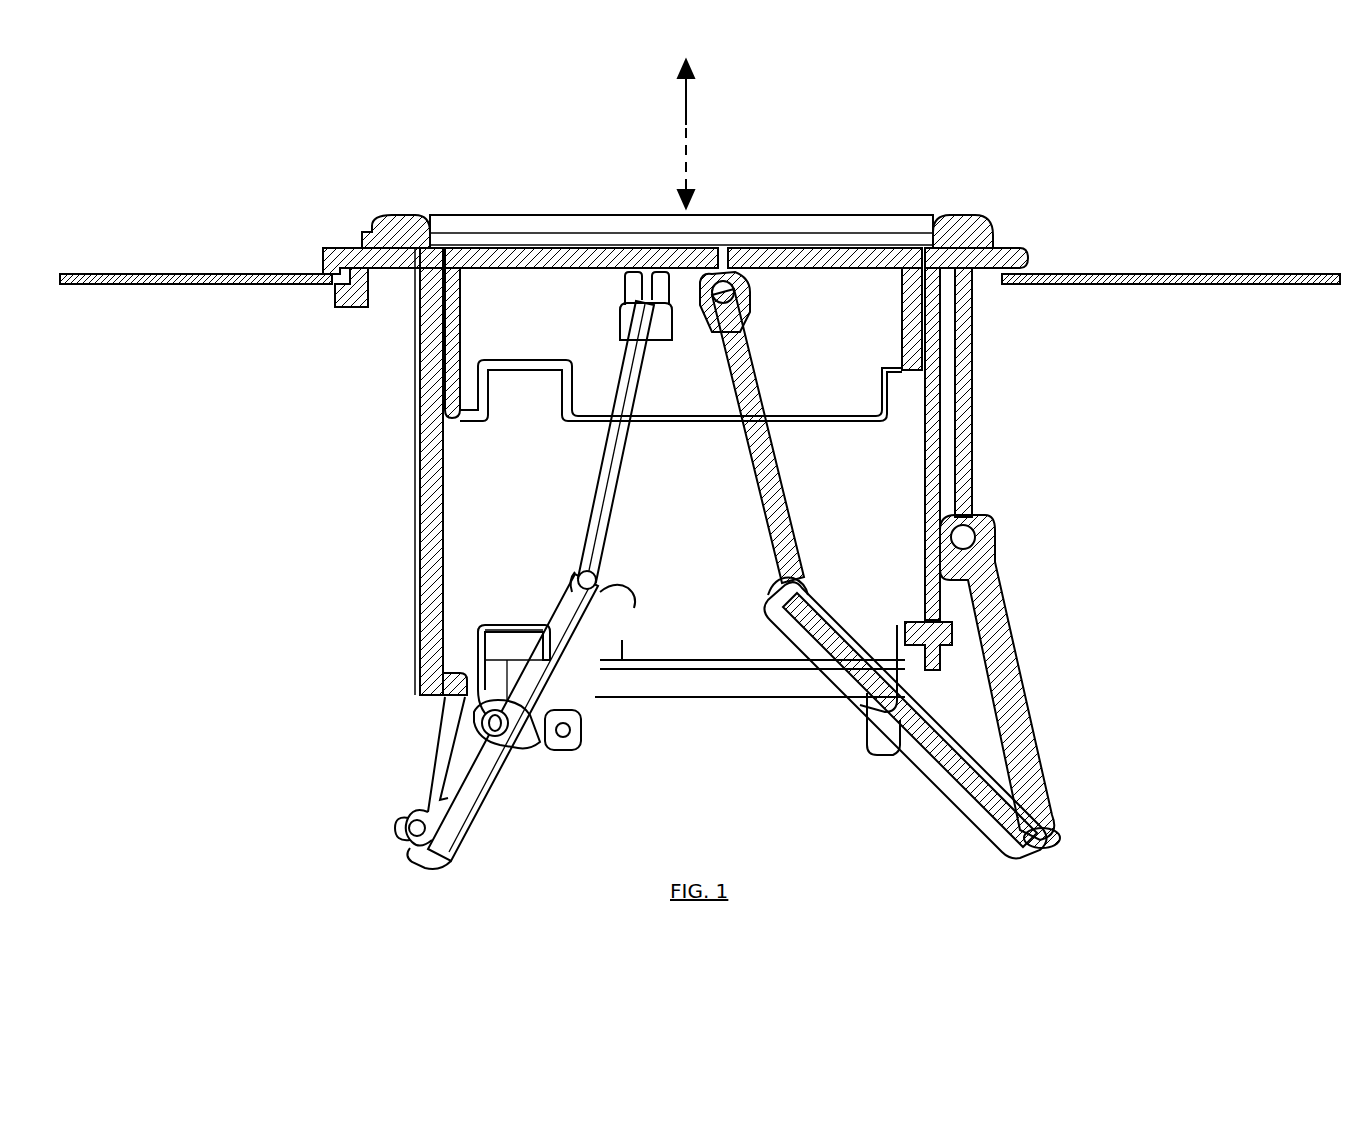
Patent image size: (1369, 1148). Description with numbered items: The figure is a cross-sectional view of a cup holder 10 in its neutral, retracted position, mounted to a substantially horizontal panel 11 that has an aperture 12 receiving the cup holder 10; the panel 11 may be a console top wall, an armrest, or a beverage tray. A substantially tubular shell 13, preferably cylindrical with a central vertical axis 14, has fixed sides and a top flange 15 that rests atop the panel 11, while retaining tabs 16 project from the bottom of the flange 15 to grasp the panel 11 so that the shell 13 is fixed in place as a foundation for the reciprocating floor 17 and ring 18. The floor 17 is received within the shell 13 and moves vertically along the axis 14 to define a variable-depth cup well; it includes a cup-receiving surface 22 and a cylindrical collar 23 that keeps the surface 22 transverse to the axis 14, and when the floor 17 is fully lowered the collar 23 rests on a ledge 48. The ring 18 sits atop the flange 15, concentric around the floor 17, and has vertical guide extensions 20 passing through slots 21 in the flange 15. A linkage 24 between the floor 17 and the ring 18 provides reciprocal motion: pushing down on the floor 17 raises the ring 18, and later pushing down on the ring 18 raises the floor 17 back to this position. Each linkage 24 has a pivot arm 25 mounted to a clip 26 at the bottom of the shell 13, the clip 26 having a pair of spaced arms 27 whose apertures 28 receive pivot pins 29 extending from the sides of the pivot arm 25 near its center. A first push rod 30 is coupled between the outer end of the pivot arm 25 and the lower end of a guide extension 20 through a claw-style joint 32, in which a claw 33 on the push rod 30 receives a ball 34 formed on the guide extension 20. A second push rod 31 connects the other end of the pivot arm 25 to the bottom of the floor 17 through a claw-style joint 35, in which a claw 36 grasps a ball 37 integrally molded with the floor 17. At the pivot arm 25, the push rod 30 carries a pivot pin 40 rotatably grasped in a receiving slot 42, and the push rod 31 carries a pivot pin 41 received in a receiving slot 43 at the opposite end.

The cup holder 10 is at (828, 165).
The panel 11 is at (145, 270).
The aperture 12 is at (1000, 290).
The tubular shell 13 is at (418, 470).
The central vertical axis 14 is at (683, 130).
The top flange 15 is at (345, 245).
The retaining tabs 16 is at (350, 305).
The floor 17 is at (485, 248).
The ring 18 is at (425, 213).
The vertical guide extensions 20 is at (975, 410).
The slots 21 is at (1000, 258).
The cup-receiving surface 22 is at (722, 215).
The cylindrical collar 23 is at (465, 320).
The linkage 24 is at (1080, 705).
The pivot arm 25 is at (918, 818).
The clip 26 is at (510, 620).
The spaced arms 27 is at (480, 722).
The apertures 28 is at (488, 740).
The pivot pins 29 is at (497, 730).
The first push rod 30 is at (1005, 648).
The second push rod 31 is at (775, 480).
The claw-style joint 32 is at (1012, 517).
The claw 33 is at (992, 545).
The ball 34 is at (965, 545).
The claw-style joint 35 is at (703, 345).
The claw 36 is at (625, 318).
The ball 37 is at (728, 292).
The pivot pin 40 is at (408, 828).
The pivot pin 41 is at (578, 576).
The receiving slot 42 is at (1055, 830).
The receiving slot 43 is at (770, 580).
The ledge 48 is at (440, 668).